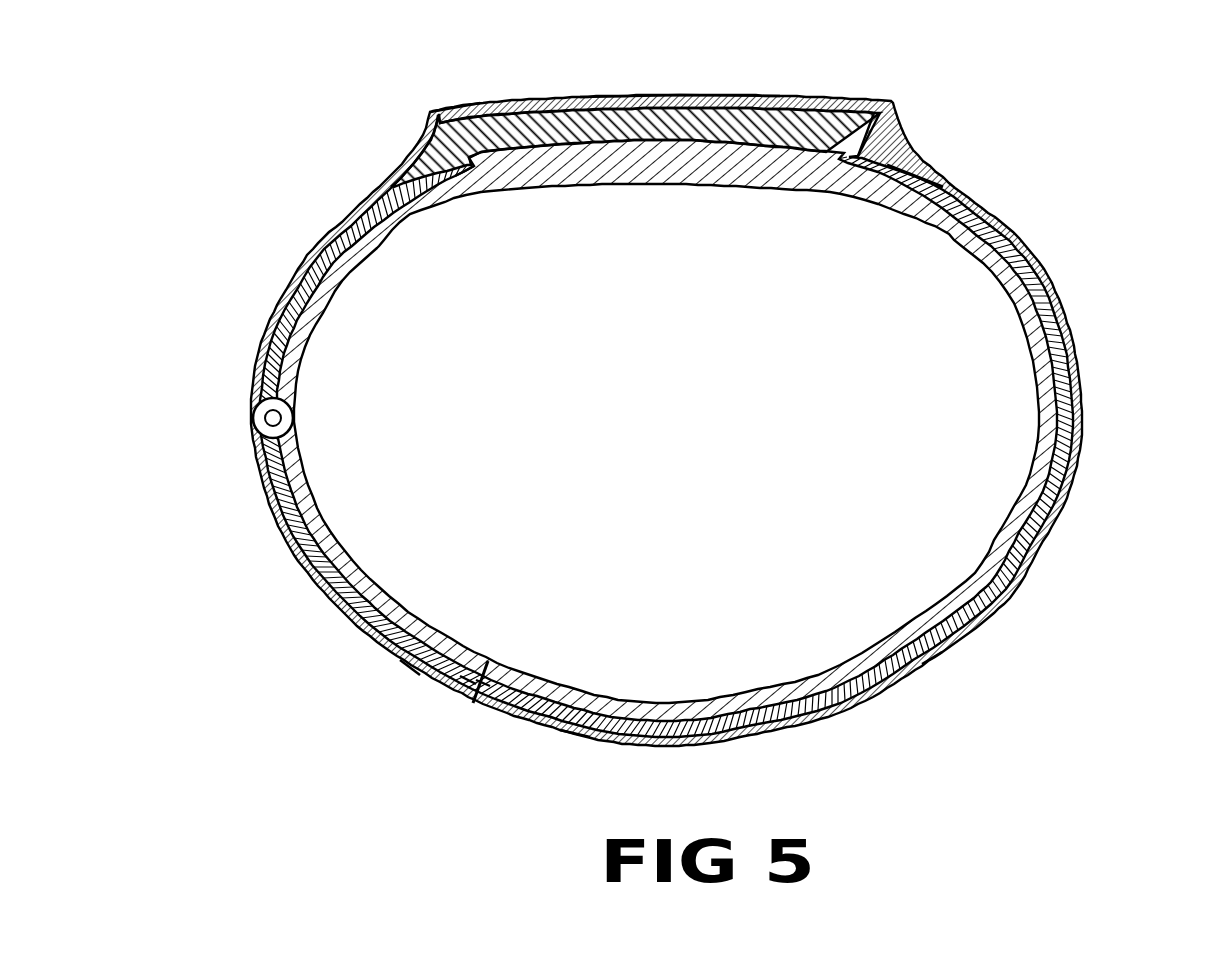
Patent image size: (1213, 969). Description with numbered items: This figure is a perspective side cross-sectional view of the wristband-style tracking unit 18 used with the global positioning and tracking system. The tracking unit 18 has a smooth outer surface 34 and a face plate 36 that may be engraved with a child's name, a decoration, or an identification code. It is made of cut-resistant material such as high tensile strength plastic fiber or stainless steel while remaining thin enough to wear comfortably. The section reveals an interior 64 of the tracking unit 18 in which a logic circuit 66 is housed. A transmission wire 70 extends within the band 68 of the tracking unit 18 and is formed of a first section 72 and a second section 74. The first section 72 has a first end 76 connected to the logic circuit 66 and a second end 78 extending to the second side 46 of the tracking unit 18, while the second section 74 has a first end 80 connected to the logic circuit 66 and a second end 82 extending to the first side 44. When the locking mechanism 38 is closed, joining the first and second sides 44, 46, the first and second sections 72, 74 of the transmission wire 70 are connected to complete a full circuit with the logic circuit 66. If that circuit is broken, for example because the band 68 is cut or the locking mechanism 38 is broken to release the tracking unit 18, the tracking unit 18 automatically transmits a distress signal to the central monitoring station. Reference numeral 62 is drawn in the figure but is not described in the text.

The tracking unit 18 is at (345, 128).
The outer surface 34 is at (455, 106).
The face plate 36 is at (680, 94).
The locking mechanism 38 is at (484, 650).
The first side 44 is at (413, 667).
The second side 46 is at (578, 738).
The wire 62 is at (273, 418).
The interior 64 is at (866, 122).
The logic circuit 66 is at (800, 128).
The band 68 is at (983, 623).
The transmission wire 70 is at (1074, 463).
The first section 72 is at (1063, 318).
The second section 74 is at (270, 380).
The first end 76 is at (887, 165).
The second end 78 is at (480, 680).
The first end 80 is at (478, 168).
The second end 82 is at (468, 683).